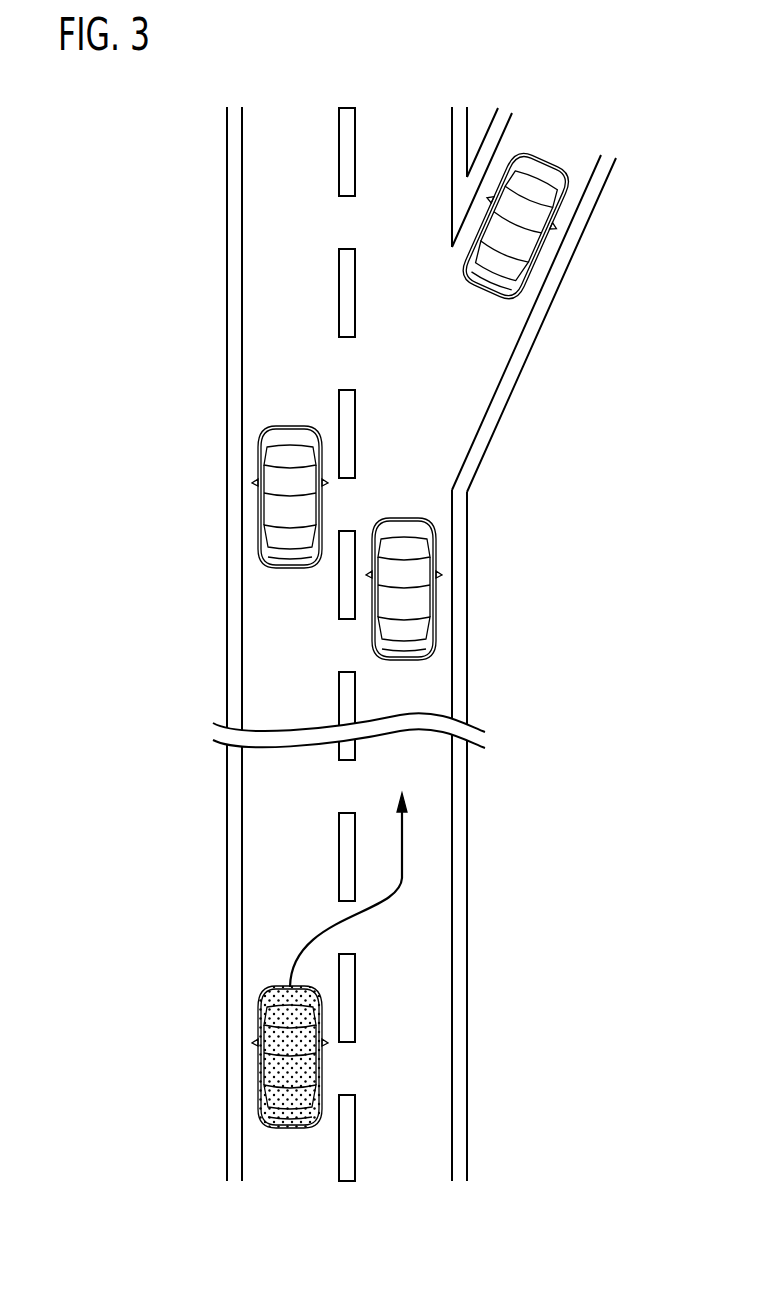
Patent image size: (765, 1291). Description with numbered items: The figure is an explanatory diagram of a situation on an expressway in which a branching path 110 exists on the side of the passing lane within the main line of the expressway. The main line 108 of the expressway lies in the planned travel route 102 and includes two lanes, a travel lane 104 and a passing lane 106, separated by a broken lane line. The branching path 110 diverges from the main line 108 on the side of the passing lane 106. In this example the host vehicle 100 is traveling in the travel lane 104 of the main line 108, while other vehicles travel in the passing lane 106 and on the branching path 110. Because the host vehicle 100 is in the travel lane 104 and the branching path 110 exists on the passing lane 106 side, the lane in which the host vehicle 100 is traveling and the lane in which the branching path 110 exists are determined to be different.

The host vehicle 100 is at (262, 1068).
The planned travel route 102 is at (224, 202).
The travel lane 104 is at (287, 857).
The passing lane 106 is at (387, 807).
The main line 108 is at (148, 790).
The branching path 110 is at (527, 366).